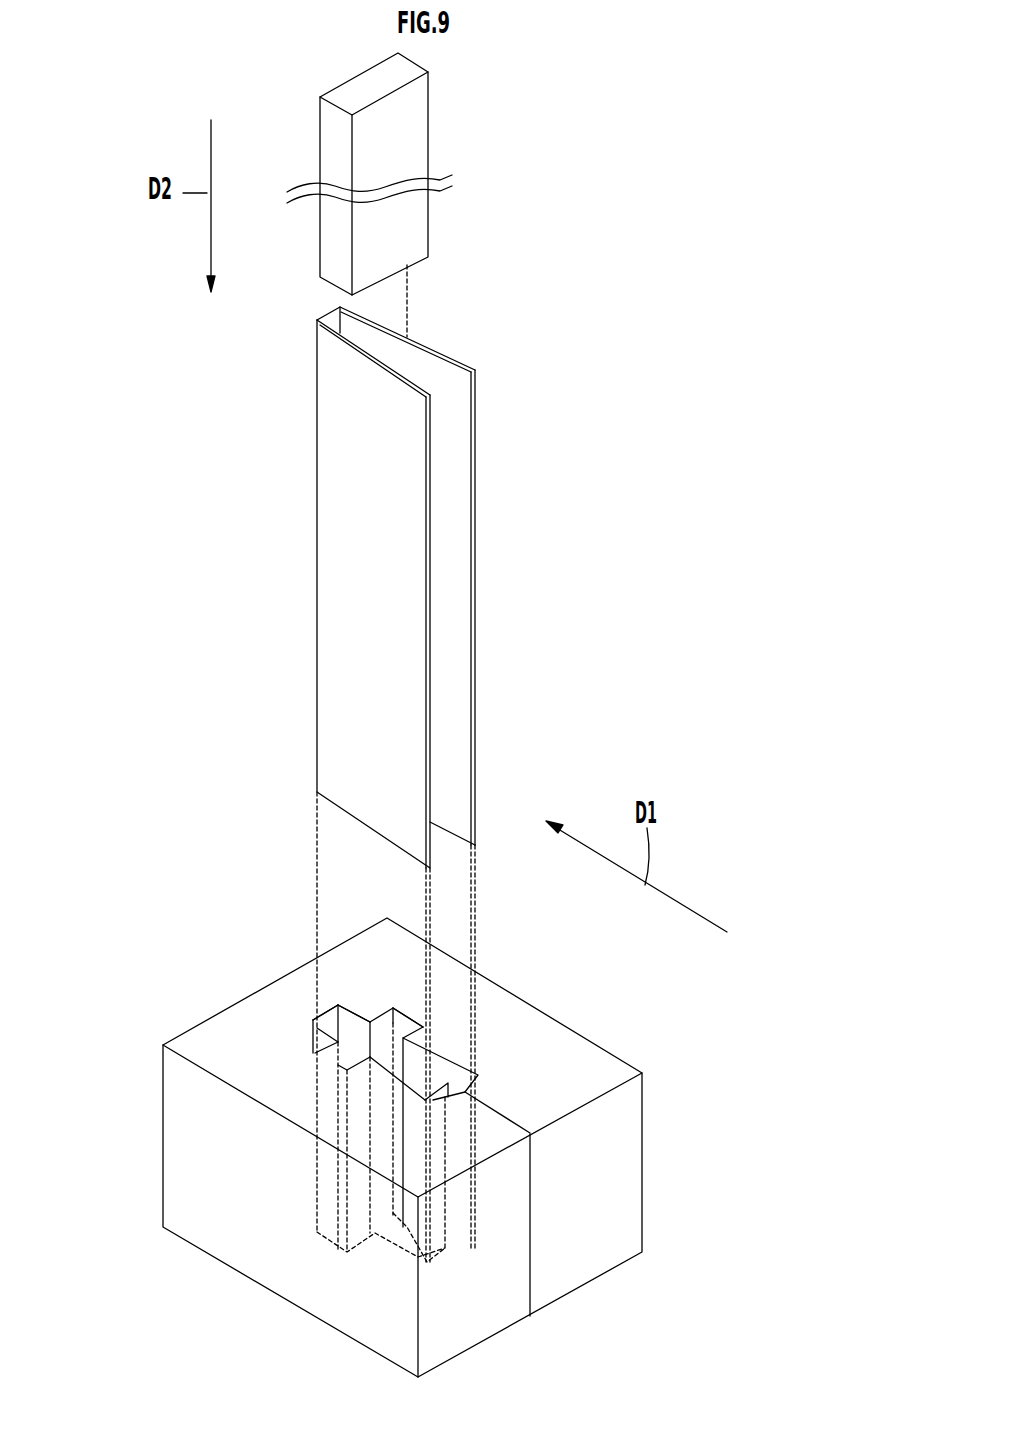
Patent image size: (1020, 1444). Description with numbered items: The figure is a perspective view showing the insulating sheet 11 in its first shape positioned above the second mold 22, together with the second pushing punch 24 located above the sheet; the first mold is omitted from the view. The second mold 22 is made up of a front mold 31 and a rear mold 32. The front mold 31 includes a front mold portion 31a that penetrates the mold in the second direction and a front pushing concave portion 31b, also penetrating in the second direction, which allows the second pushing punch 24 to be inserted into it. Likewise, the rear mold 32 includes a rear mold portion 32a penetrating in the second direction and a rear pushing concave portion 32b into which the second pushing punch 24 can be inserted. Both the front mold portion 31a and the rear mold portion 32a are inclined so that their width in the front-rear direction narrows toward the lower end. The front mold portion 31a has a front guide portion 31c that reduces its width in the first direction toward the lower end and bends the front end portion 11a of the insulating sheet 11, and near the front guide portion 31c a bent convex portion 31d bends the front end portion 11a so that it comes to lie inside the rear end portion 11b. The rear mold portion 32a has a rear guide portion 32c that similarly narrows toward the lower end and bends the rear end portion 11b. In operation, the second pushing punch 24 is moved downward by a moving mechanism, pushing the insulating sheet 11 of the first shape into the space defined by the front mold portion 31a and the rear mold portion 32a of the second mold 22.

The second pushing punch 24 is at (410, 154).
The insulating sheet 11 is at (364, 784).
The front end portion 11a is at (430, 583).
The rear end portion 11b is at (477, 482).
The second mold 22 is at (603, 1027).
The front mold 31 is at (203, 1032).
The front mold portion 31a is at (313, 1020).
The front pushing concave portion 31b is at (318, 1030).
The front guide portion 31c is at (483, 1130).
The bent convex portion 31d is at (433, 1033).
The rear mold 32 is at (540, 1027).
The rear mold portion 32a is at (355, 1003).
The rear pushing concave portion 32b is at (412, 1003).
The rear guide portion 32c is at (505, 1102).